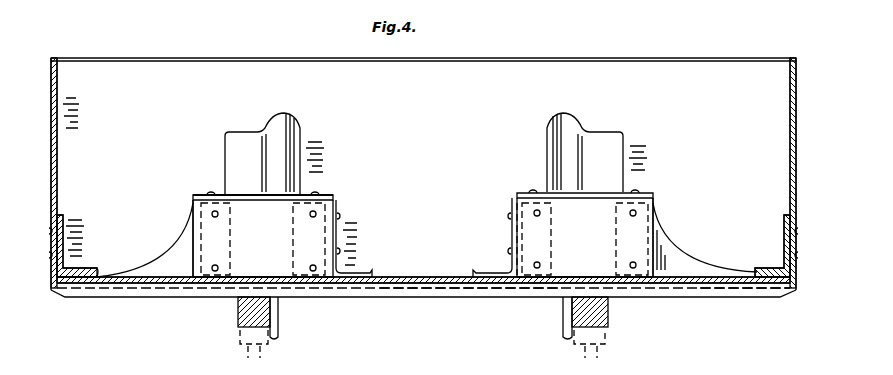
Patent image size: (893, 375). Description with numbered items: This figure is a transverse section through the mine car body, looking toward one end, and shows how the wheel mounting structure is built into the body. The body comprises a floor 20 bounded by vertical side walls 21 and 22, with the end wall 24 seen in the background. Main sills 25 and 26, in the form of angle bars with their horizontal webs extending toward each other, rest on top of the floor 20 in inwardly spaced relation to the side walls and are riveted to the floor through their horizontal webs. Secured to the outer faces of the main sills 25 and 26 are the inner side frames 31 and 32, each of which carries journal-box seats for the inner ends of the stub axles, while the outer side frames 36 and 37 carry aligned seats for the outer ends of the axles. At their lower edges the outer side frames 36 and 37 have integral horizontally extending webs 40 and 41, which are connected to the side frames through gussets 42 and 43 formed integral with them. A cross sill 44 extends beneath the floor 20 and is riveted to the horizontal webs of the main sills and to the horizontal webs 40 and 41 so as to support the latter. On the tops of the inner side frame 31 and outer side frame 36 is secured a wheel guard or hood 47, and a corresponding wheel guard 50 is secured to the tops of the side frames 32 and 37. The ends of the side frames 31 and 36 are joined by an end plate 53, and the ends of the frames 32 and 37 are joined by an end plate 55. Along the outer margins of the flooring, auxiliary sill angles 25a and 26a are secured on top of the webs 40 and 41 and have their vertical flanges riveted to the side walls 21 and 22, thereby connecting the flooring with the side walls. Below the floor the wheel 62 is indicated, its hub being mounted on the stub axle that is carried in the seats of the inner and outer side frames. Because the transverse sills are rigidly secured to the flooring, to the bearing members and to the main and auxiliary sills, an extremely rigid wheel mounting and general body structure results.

The floor 20 is at (415, 277).
The vertical side wall 21 is at (57, 182).
The vertical side wall 22 is at (790, 137).
The end wall 24 is at (522, 64).
The main sill 25 is at (338, 228).
The auxiliary sill angle 25a is at (66, 247).
The main sill 26 is at (511, 206).
The auxiliary sill angle 26a is at (786, 236).
The inner side frame 31 is at (336, 203).
The inner side frame 32 is at (520, 234).
The outer side frame 36 is at (194, 194).
The outer side frame 37 is at (656, 214).
The horizontal web 40 is at (142, 297).
The horizontal web 41 is at (708, 294).
The gusset 42 is at (162, 246).
The gusset 43 is at (690, 245).
The cross sill 44 is at (472, 290).
The wheel guard 47 is at (300, 128).
The wheel guard 50 is at (608, 130).
The end plate 53 is at (263, 234).
The end plate 55 is at (585, 233).
The wheel 62 is at (240, 316).